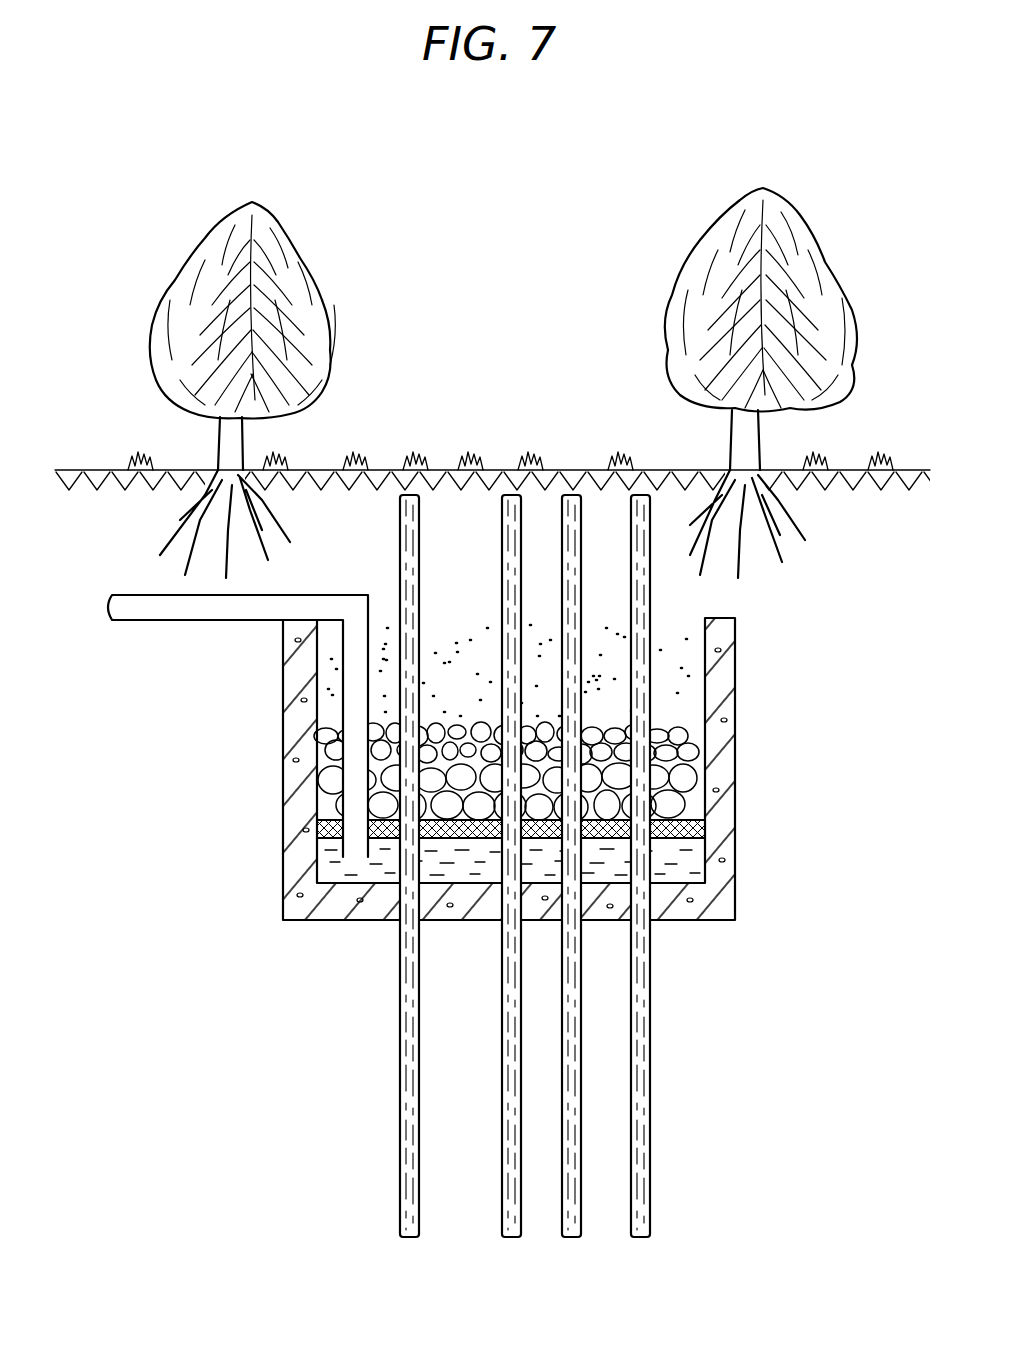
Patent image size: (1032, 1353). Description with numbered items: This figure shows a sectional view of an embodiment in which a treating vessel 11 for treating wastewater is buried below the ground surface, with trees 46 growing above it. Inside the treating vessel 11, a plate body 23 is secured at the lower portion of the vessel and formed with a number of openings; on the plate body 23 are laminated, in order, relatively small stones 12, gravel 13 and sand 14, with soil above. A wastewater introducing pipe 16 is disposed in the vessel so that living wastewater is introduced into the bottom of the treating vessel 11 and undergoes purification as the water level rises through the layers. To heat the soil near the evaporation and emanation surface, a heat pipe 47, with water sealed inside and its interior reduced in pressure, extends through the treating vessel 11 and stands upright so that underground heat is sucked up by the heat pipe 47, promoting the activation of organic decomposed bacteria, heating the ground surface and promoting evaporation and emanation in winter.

The treating vessel 11 is at (720, 835).
The relatively small stones 12 is at (690, 782).
The gravel 13 is at (690, 727).
The sand 14 is at (685, 682).
The wastewater introducing pipe 16 is at (227, 620).
The plate body 23 is at (447, 843).
The tree 46 is at (817, 295).
The heat pipe 47 is at (652, 597).